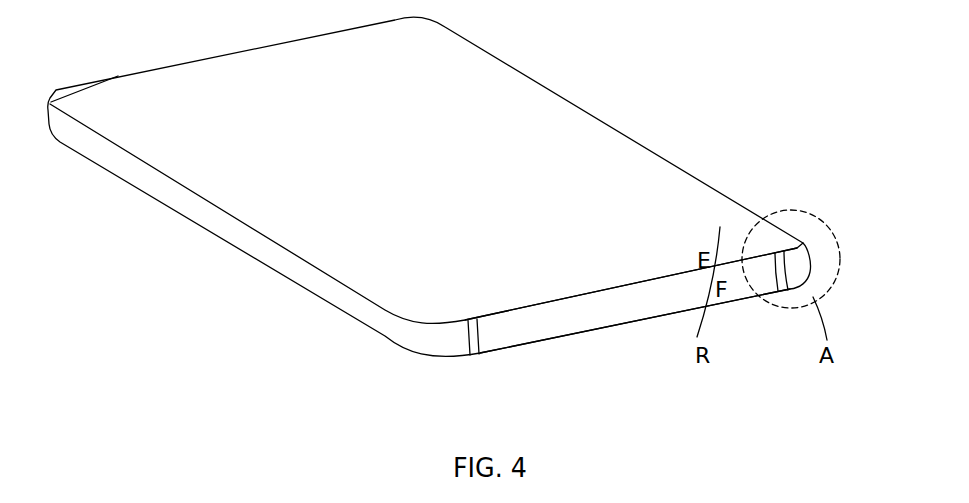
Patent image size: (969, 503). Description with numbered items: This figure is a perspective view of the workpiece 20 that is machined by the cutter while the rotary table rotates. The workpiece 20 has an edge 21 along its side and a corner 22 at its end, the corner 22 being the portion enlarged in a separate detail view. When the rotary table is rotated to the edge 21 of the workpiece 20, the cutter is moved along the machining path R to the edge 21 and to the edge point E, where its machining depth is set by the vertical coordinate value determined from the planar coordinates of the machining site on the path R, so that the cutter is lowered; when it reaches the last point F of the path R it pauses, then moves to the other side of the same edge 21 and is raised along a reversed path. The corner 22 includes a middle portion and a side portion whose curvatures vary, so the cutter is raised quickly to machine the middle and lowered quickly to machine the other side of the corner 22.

The workpiece 20 is at (640, 115).
The edge 21 is at (640, 310).
The corner 22 is at (806, 260).